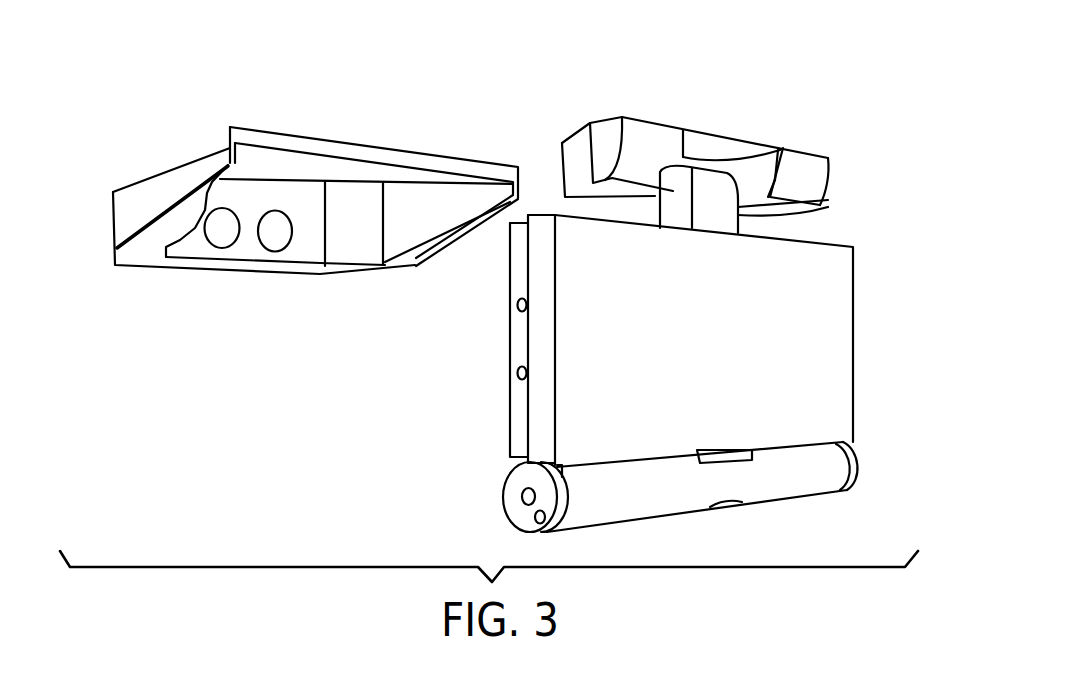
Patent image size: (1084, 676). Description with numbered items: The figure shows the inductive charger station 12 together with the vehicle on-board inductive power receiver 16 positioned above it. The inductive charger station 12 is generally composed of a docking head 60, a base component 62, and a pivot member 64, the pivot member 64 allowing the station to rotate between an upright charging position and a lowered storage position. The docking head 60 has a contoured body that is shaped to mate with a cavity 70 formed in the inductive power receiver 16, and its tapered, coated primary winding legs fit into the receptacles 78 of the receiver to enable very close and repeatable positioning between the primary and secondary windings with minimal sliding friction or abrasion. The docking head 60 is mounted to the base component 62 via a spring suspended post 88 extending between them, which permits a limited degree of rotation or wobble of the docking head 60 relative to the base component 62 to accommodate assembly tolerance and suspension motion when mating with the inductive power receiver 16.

The inductive charger station 12 is at (857, 177).
The inductive power receiver 16 is at (177, 146).
The docking head 60 is at (670, 100).
The base component 62 is at (877, 365).
The pivot member 64 is at (877, 470).
The cavity 70 is at (307, 283).
The receptacles 78 is at (273, 234).
The spring suspended post 88 is at (723, 219).